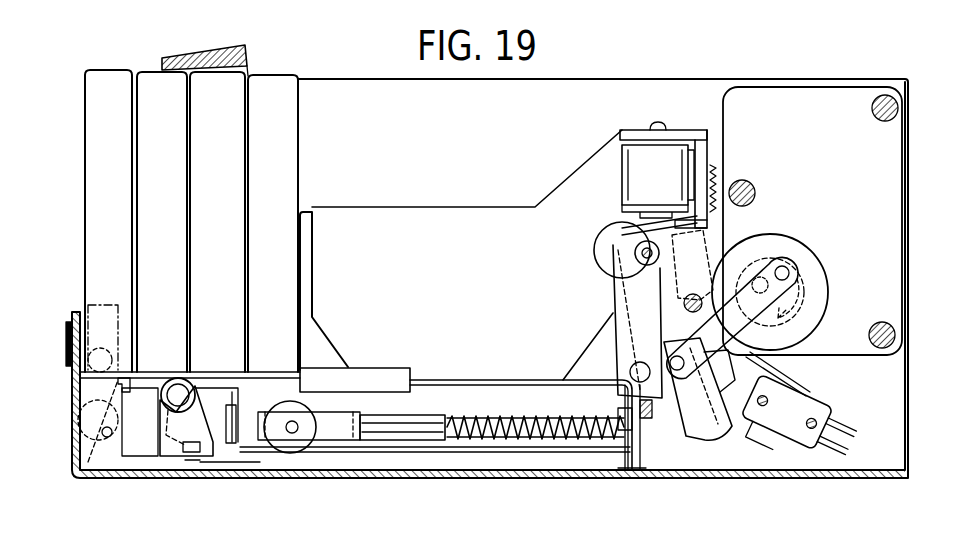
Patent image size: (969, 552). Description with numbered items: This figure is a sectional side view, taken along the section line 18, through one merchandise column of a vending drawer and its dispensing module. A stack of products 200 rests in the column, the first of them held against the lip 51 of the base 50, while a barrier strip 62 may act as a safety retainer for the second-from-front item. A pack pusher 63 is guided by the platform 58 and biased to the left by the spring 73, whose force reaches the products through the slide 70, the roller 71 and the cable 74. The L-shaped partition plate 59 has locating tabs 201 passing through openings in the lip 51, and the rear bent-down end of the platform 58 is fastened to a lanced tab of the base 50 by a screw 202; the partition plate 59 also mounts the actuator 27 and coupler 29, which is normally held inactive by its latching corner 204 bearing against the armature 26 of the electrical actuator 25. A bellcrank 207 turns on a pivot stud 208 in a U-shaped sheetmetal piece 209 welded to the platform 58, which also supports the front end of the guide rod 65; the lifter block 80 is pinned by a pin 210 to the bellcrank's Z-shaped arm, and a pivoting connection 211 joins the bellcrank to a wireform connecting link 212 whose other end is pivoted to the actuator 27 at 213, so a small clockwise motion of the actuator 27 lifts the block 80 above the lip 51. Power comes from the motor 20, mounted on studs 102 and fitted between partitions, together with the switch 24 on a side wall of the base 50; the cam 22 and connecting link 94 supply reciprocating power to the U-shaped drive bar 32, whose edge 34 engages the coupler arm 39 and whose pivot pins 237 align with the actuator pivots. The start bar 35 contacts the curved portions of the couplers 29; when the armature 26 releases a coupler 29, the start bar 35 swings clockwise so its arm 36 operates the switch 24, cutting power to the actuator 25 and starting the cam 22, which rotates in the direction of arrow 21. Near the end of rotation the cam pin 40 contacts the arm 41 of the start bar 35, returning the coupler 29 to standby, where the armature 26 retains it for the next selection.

The section line 18- 18 is at (85, 0).
The motor 20 is at (820, 161).
The rotation arrow 21 is at (804, 295).
The cam 22 is at (830, 276).
The switch 24 is at (794, 424).
The electrical actuator 25 is at (658, 194).
The armature 26 is at (628, 228).
The actuator 27 is at (657, 420).
The coupler 29 is at (612, 293).
The drive bar 32 is at (722, 440).
The edge 34 is at (732, 371).
The start bar 35 is at (724, 252).
The arm 36 is at (748, 318).
The coupler arm 39 is at (698, 389).
The pin 40 is at (796, 244).
The arm 41 is at (770, 282).
The base 50 is at (511, 488).
The lip 51 is at (78, 380).
The platform 58 is at (444, 372).
The partition plate 59 is at (470, 242).
The barrier strip 62 is at (206, 58).
The pack pusher 63 is at (318, 266).
The guide rod 65 is at (240, 414).
The slide 70 is at (440, 418).
The roller 71 is at (296, 455).
The spring 73 is at (536, 418).
The cable 74 is at (606, 460).
The lifter block 80 is at (96, 410).
The connecting link 94 is at (800, 265).
The stud 102 is at (872, 106).
The products 200 is at (124, 174).
The locating tab 201 is at (66, 326).
The screw 202 is at (648, 464).
The latching corner 204 is at (606, 229).
The bellcrank 207 is at (205, 392).
The pivot stud 208 is at (174, 378).
The U-shaped sheetmetal piece 209 is at (246, 390).
The pin 210 is at (104, 434).
The pivoting connection 211 is at (192, 462).
The connecting link 212 is at (243, 465).
The pivot connection 213 is at (624, 412).
The pivot pin 237 is at (636, 256).